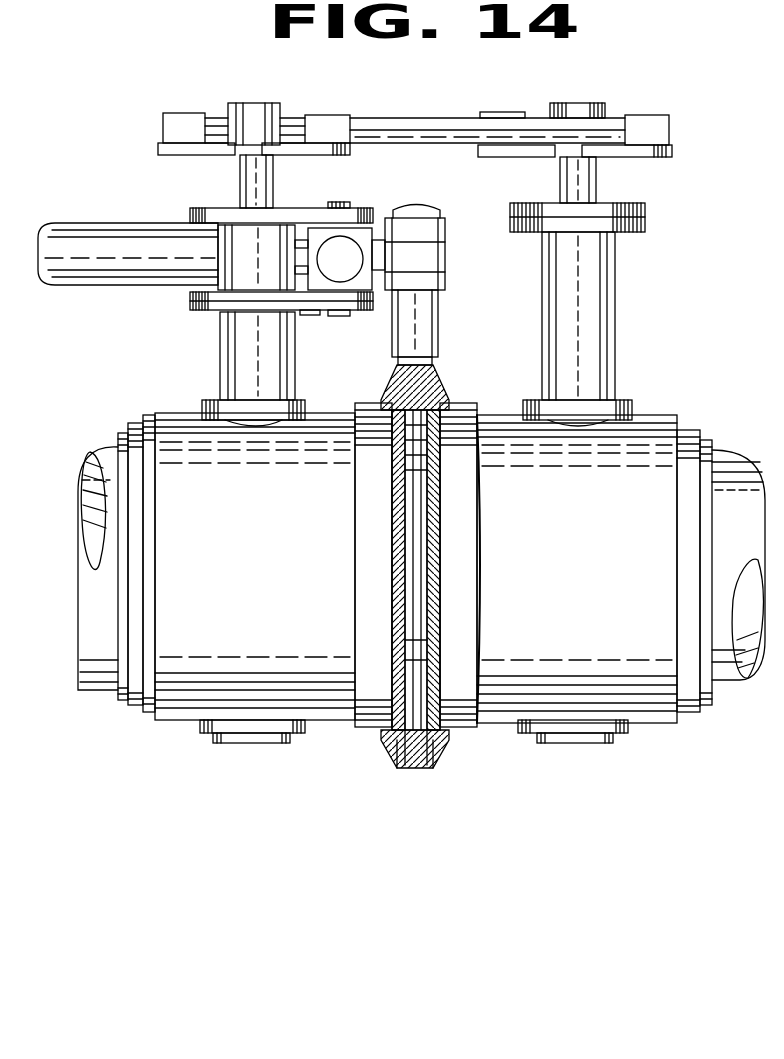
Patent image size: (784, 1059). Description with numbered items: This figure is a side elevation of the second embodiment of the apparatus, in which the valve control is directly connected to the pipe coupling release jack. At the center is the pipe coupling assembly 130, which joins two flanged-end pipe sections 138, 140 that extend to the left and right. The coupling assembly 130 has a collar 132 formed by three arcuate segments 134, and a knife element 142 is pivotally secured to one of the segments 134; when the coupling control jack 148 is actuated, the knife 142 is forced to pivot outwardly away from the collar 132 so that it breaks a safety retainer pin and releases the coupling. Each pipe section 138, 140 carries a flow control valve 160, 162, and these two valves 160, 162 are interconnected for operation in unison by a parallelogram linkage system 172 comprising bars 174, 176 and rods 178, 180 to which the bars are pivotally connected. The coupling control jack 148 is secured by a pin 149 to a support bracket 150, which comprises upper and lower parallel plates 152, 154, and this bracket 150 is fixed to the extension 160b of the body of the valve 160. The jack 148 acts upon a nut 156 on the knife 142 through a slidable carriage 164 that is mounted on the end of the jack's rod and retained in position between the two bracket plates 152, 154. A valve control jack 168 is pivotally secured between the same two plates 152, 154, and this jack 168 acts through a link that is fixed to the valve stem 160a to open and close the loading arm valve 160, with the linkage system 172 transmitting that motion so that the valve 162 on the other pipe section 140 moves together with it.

The pipe coupling assembly 130 is at (408, 561).
The collar 132 is at (386, 759).
The arcuate segments 134 is at (443, 399).
The flanged-end pipe section 138 is at (92, 664).
The flanged-end pipe section 140 is at (745, 688).
The knife element 142 is at (408, 285).
The coupling control jack 148 is at (355, 270).
The pin 149 is at (347, 205).
The support bracket 150 is at (190, 293).
The upper plate 152 is at (227, 209).
The lower plate 154 is at (192, 308).
The nut 156 is at (392, 331).
The flow control valve 160 is at (181, 412).
The valve stem 160a is at (266, 177).
The extension of the valve body 160b is at (220, 344).
The flow control valve 162 is at (648, 415).
The slidable carriage 164 is at (430, 256).
The valve control jack 168 is at (104, 230).
The parallelogram linkage system 172 is at (464, 119).
The bar 174 is at (219, 154).
The bar 176 is at (668, 162).
The rod 178 is at (293, 118).
The rod 180 is at (372, 120).